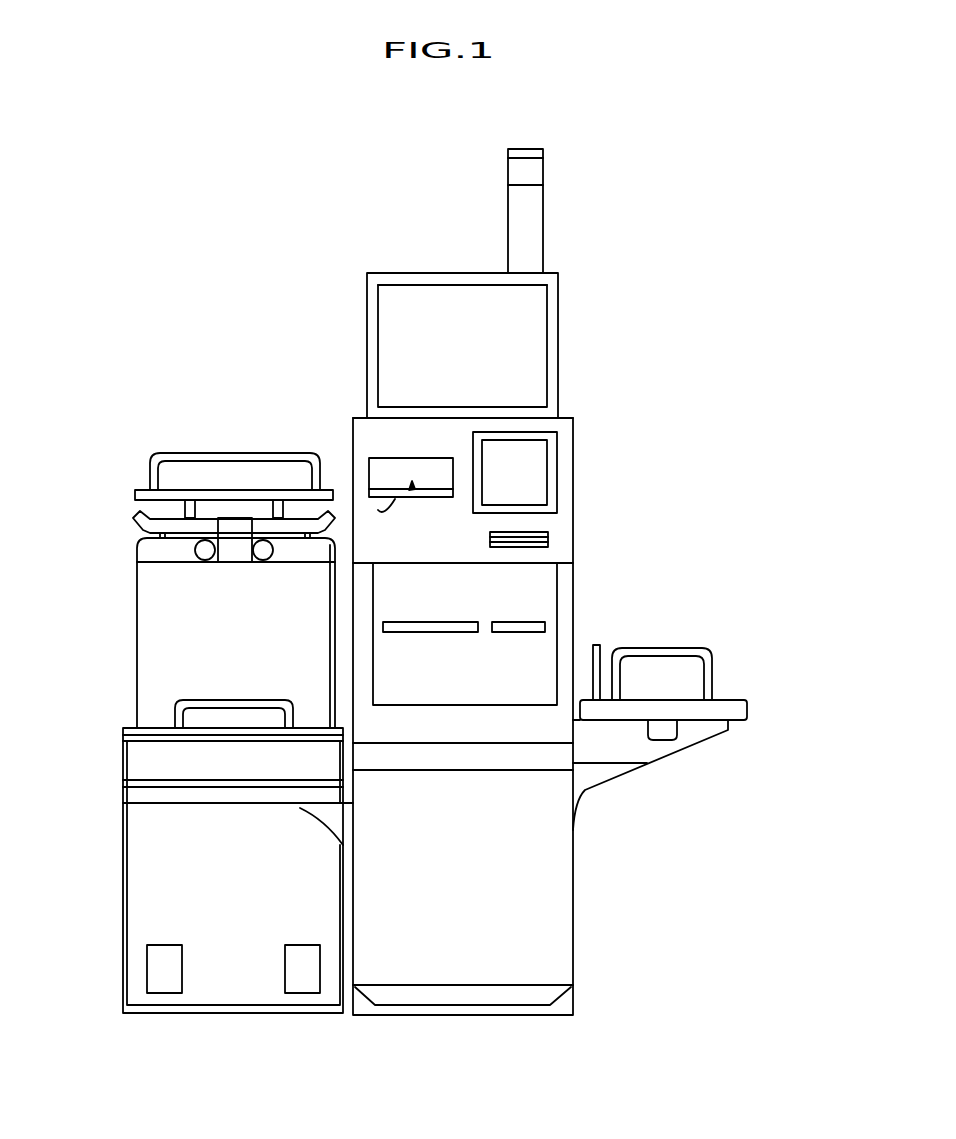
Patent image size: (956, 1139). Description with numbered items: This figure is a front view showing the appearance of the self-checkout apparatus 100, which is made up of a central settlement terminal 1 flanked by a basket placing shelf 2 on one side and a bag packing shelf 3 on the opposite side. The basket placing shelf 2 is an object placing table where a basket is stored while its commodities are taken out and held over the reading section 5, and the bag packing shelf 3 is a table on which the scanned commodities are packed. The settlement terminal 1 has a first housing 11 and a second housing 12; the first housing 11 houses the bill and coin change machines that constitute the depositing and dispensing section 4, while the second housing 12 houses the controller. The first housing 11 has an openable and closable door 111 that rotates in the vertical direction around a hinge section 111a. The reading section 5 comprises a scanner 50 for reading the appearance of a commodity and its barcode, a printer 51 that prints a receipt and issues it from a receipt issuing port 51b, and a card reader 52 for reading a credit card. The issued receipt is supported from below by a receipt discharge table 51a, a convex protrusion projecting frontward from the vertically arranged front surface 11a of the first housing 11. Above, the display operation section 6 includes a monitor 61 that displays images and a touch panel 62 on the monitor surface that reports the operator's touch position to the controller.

The self-checkout apparatus 100 is at (620, 198).
The settlement terminal 1 is at (559, 294).
The basket placing shelf 2 is at (750, 710).
The bag packing shelf 3 is at (124, 754).
The depositing and dispensing section 4 is at (540, 650).
The reading section 5 is at (573, 460).
The display operation section 6 is at (537, 343).
The first housing 11 is at (350, 443).
The front surface 11a is at (413, 430).
The second housing 12 is at (573, 857).
The scanner 50 is at (560, 442).
The printer 51 is at (387, 457).
The receipt discharge table 51a is at (378, 510).
The receipt issuing port 51b is at (412, 484).
The card reader 52 is at (490, 540).
The monitor 61 is at (398, 300).
The touch panel 62 is at (438, 300).
The door 111 is at (573, 587).
The hinge section 111a is at (547, 563).